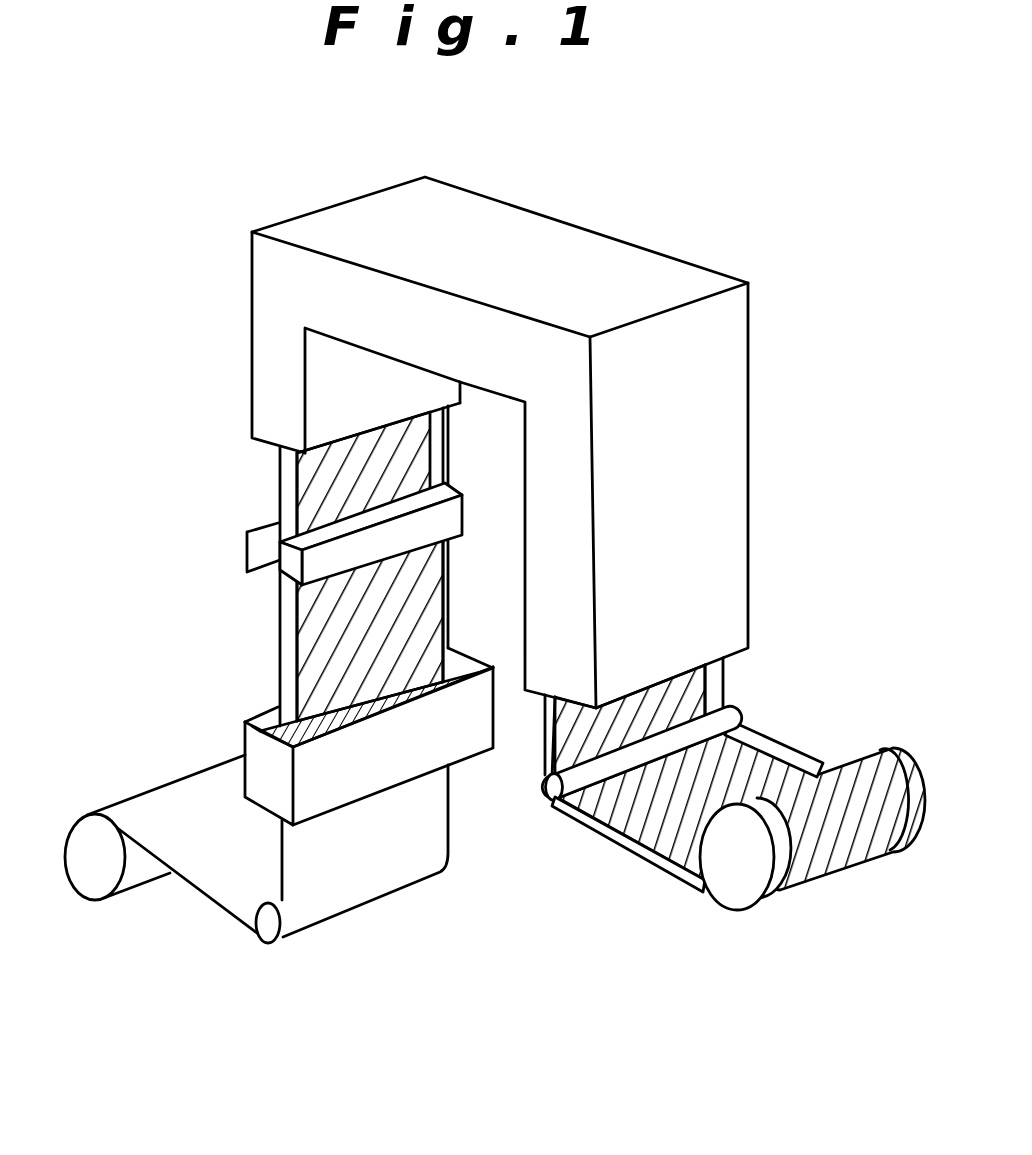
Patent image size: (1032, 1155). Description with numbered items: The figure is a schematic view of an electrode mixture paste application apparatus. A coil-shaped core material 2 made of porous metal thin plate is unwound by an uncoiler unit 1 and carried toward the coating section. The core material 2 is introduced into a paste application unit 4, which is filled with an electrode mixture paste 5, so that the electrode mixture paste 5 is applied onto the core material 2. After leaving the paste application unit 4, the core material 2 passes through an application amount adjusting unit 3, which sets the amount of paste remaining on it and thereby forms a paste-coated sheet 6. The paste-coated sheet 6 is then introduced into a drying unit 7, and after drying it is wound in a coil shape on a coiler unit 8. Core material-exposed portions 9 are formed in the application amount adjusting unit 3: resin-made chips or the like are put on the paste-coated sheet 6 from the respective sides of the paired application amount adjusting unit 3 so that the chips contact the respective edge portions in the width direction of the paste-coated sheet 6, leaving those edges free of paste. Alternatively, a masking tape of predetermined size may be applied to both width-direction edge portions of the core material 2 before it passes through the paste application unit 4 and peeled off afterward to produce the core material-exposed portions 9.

The uncoiler unit 1 is at (95, 880).
The core material 2 is at (232, 867).
The application amount adjusting unit 3 is at (264, 547).
The paste application unit 4 is at (260, 753).
The electrode mixture paste 5 is at (260, 718).
The paste-coated sheet 6 is at (298, 637).
The drying unit 7 is at (637, 274).
The coiler unit 8 is at (743, 867).
The core material-exposed portions 9 is at (288, 480).